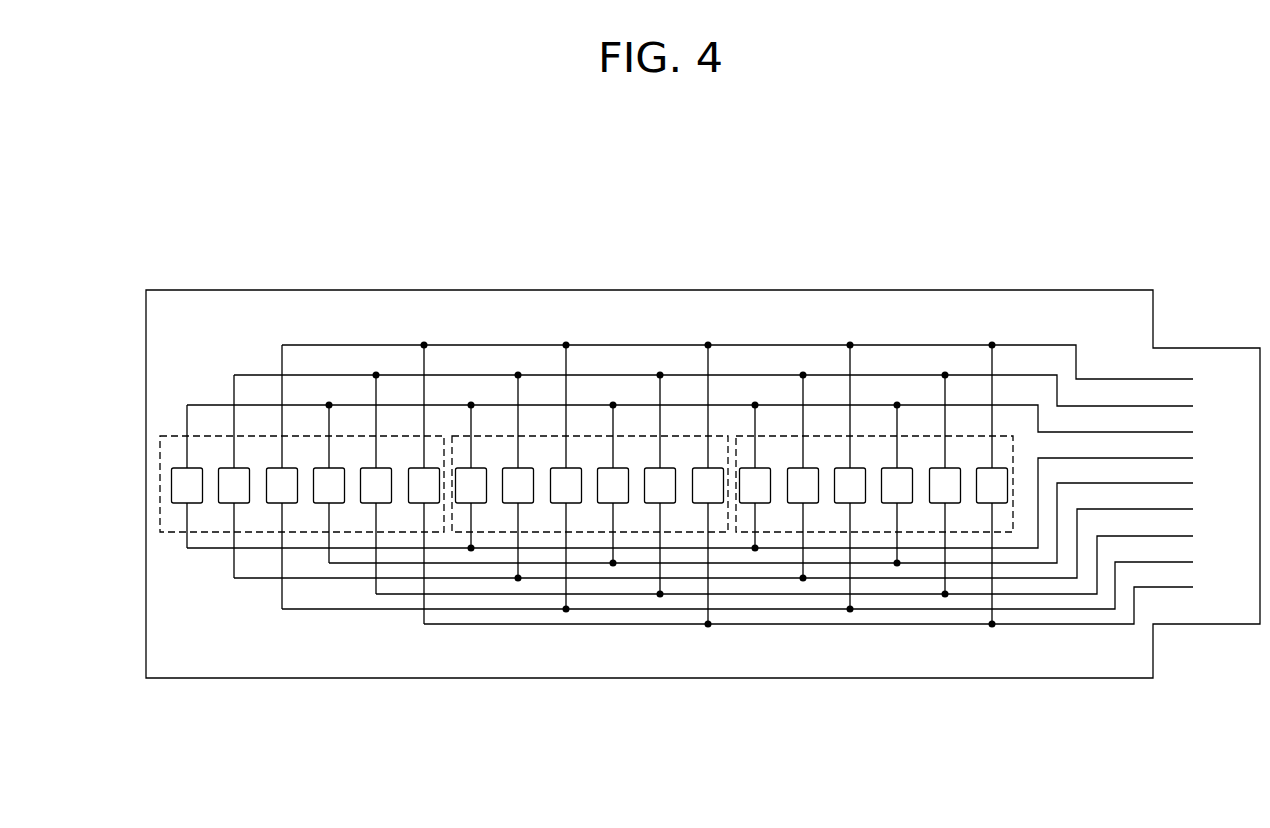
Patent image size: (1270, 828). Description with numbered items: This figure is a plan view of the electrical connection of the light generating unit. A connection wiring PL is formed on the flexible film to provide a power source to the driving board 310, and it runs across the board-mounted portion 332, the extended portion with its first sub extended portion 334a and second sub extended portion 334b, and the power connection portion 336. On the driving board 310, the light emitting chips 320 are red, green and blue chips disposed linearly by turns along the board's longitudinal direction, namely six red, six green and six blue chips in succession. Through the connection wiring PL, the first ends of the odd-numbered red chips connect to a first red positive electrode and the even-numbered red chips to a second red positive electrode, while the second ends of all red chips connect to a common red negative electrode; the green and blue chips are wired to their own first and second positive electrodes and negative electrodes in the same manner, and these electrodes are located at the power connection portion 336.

The driving board 310 is at (294, 427).
The light emitting chips 320 is at (197, 459).
The board-mounted portion 332 is at (538, 384).
The first sub extended portion 334a is at (153, 632).
The second sub extended portion 334b is at (153, 336).
The power connection portion 336 is at (1213, 668).
The connection wiring PL is at (452, 337).